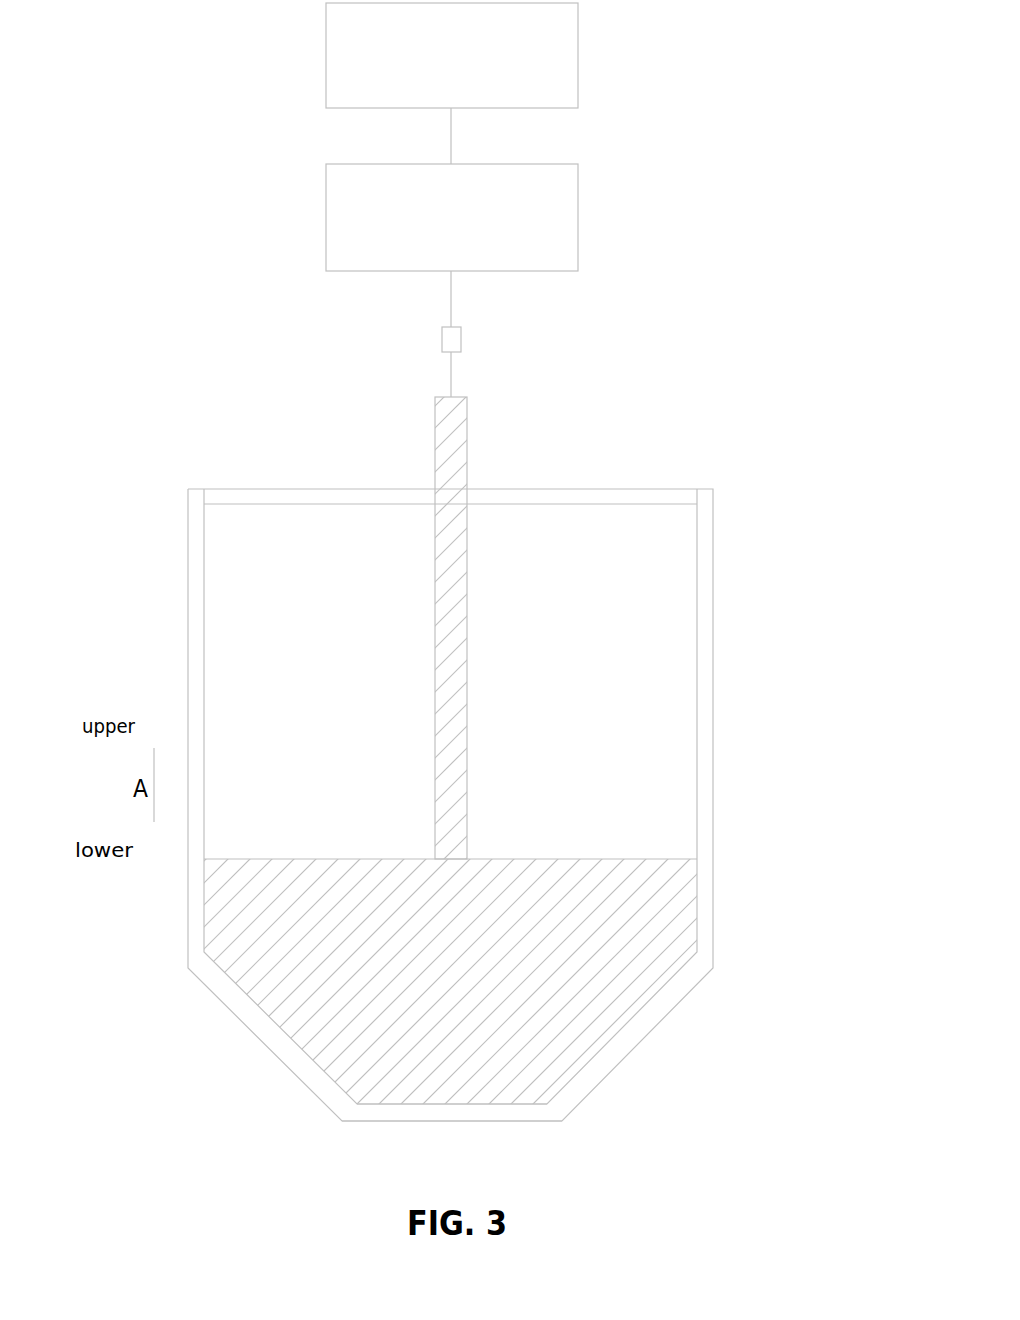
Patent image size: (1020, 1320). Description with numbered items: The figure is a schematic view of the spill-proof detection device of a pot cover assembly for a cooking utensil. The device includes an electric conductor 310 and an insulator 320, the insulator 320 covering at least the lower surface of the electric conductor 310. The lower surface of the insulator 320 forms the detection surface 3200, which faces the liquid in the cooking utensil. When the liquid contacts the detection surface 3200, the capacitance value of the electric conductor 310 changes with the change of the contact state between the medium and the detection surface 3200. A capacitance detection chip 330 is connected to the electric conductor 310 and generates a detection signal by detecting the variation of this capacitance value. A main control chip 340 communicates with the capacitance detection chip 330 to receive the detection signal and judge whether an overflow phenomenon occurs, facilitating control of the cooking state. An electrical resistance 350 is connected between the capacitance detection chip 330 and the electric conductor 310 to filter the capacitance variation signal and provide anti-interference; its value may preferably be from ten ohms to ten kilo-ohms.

The electric conductor 310 is at (585, 980).
The insulator 320 is at (708, 742).
The detection surface 3200 is at (450, 1121).
The capacitance detection chip 330 is at (555, 224).
The main control chip 340 is at (565, 90).
The electrical resistance 350 is at (458, 333).